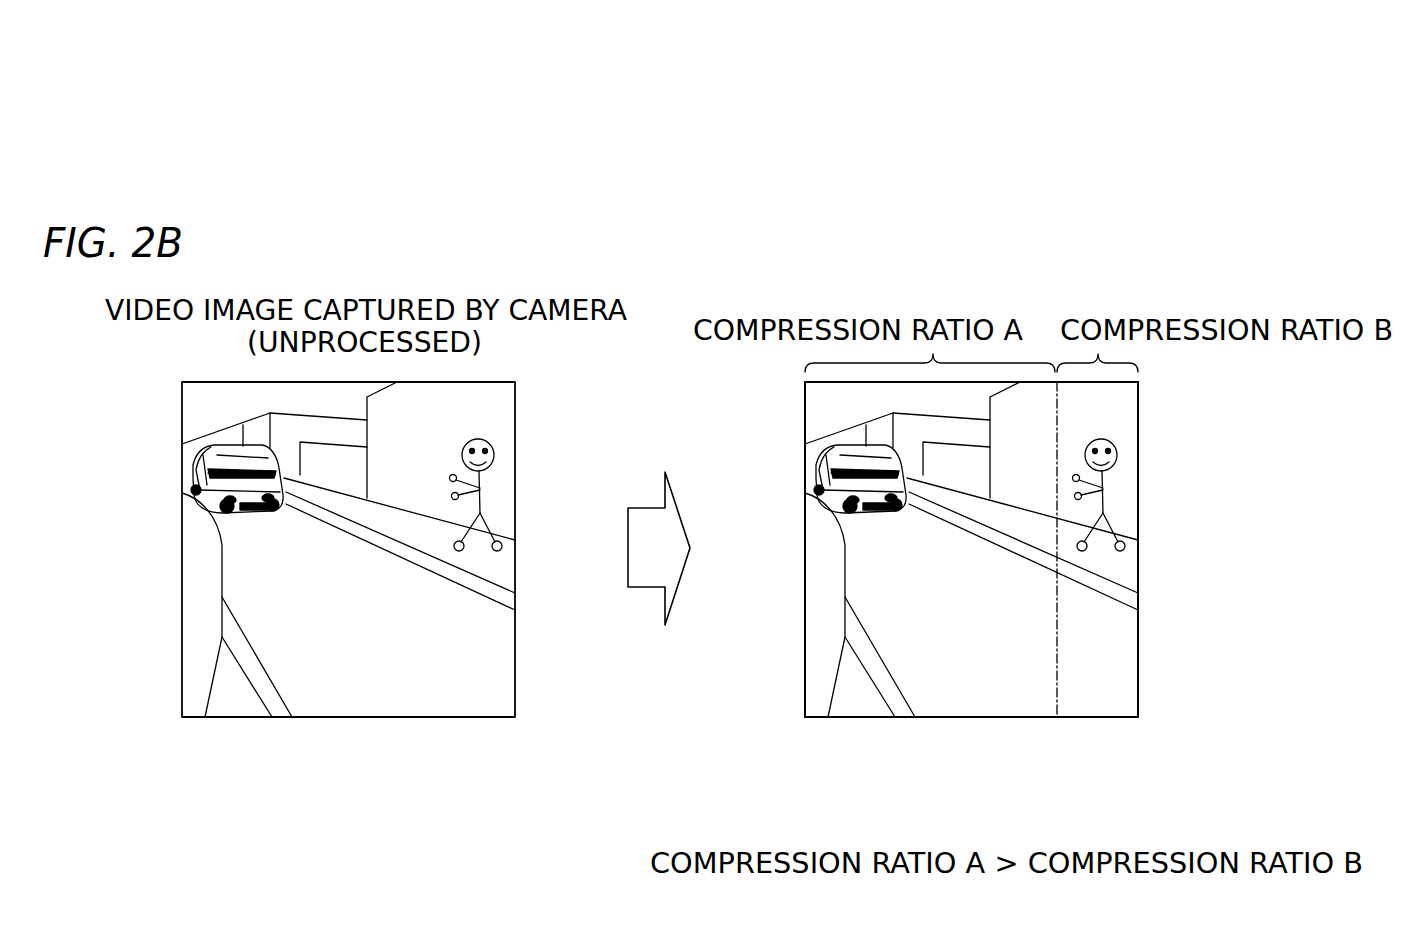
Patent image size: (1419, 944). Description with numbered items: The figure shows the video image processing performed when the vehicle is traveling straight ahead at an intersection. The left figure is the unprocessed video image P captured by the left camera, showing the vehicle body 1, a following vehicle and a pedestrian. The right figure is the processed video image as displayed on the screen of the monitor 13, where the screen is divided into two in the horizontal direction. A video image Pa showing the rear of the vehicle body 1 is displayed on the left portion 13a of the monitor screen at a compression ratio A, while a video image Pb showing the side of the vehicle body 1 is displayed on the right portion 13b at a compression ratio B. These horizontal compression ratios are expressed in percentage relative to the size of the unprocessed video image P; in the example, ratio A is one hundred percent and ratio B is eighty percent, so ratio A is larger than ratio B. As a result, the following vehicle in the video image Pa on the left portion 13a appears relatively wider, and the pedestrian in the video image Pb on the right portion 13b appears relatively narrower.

The vehicle body 1 is at (224, 575).
The monitor 13 is at (965, 600).
The left portion 13a is at (827, 648).
The right portion 13b is at (1110, 650).
The unprocessed video image P is at (348, 601).
The video image Pa is at (860, 687).
The video image Pb is at (1082, 687).